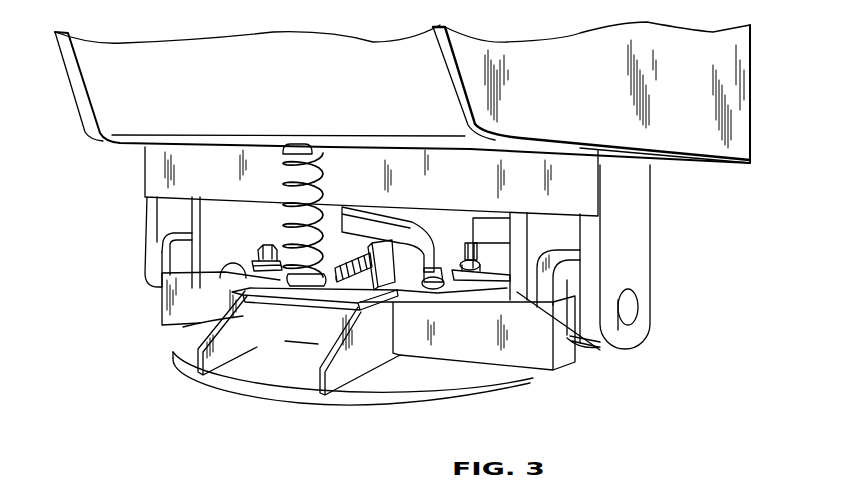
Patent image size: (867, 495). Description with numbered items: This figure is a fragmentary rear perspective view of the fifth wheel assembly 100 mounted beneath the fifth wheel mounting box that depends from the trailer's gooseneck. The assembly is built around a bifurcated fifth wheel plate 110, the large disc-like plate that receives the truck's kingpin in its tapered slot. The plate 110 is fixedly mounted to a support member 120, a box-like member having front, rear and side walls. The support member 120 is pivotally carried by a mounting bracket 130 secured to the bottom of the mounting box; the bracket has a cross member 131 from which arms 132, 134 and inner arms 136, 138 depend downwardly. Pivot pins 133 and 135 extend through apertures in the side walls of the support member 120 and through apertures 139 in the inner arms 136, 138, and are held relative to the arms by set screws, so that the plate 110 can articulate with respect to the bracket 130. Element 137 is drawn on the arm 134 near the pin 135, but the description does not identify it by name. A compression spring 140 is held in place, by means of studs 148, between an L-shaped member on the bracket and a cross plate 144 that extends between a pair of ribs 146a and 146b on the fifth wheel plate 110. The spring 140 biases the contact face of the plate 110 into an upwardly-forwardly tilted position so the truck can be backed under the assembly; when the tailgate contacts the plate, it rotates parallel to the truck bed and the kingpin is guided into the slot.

The fifth wheel assembly 100 is at (140, 243).
The bifurcated fifth wheel plate 110 is at (250, 398).
The support member 120 is at (562, 360).
The mounting bracket 130 is at (673, 198).
The cross member 131 is at (178, 163).
The arm 132 is at (148, 212).
The pivot pin 133 is at (173, 268).
The arm 134 is at (652, 265).
The pivot pin 135 is at (633, 305).
The inner arm 136 is at (198, 218).
The pin 137 is at (632, 322).
The inner arm 138 is at (600, 350).
The aperture 139 is at (225, 258).
The compression spring 140 is at (316, 187).
The cross plate 144 is at (327, 305).
The rib 146a is at (196, 327).
The rib 146b is at (338, 383).
The stud 148 is at (281, 156).